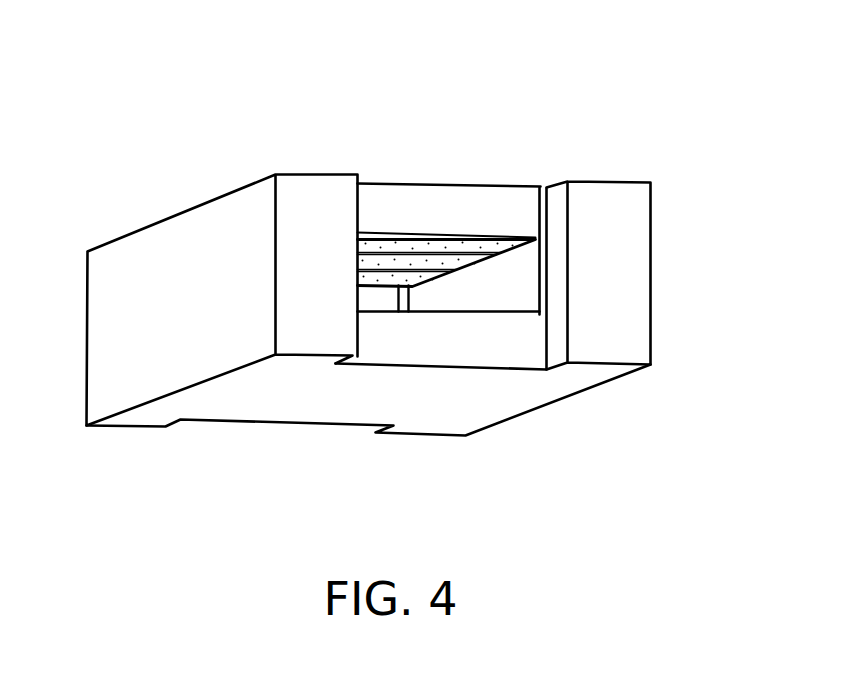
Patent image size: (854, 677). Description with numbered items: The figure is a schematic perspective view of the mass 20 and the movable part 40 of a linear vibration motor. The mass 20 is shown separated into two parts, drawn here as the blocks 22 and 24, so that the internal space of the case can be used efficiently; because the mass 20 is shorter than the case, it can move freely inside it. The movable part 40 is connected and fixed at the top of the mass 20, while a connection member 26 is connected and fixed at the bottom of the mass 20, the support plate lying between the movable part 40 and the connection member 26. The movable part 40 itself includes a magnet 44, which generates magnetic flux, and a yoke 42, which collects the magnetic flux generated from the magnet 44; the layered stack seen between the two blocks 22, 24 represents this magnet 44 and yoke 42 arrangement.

The mass 20 is at (126, 441).
The first block 22 is at (182, 248).
The second block 24 is at (617, 215).
The connection member 26 is at (425, 343).
The movable part 40 is at (430, 190).
The yoke 42 is at (500, 200).
The magnet 44 is at (423, 263).